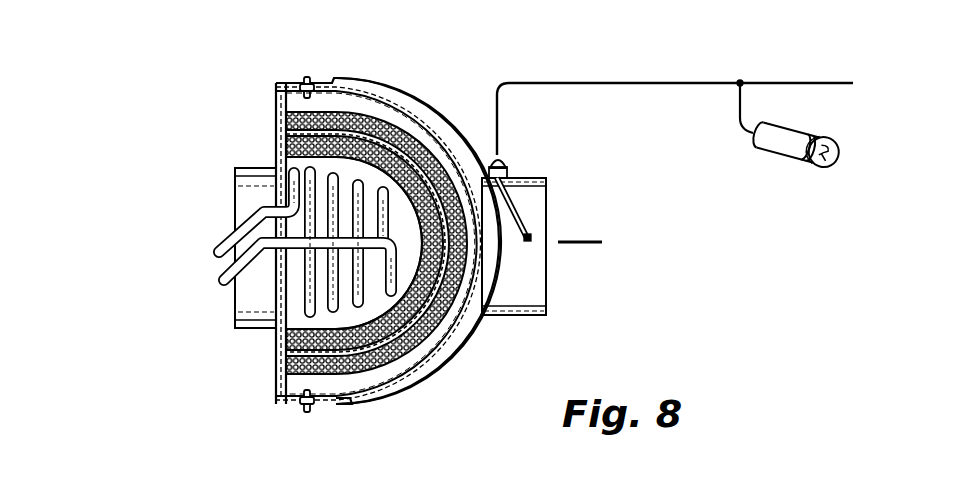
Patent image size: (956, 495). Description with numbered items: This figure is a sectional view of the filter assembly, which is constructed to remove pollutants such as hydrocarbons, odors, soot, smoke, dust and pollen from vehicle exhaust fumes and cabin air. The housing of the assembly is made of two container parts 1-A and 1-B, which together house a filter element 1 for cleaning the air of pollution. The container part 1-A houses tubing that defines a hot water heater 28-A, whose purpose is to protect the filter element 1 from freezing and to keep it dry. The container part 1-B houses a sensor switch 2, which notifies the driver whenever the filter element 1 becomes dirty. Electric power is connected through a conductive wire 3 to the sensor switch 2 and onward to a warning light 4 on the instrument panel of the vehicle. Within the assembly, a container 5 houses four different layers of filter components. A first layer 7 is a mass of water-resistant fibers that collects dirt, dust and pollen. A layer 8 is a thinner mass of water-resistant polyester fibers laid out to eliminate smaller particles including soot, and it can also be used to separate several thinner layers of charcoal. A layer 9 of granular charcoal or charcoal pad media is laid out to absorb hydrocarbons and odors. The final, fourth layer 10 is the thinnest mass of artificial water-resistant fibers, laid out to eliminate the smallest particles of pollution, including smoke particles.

The filter element 1 is at (462, 262).
The container part 1-A is at (297, 77).
The container part 1-B is at (432, 60).
The sensor switch 2 is at (531, 234).
The conductive wire 3 is at (748, 82).
The warning light 4 is at (786, 117).
The container 5 is at (305, 105).
The first layer 7 is at (278, 347).
The second or third layer 8 is at (278, 355).
The third or second layer 9 is at (278, 362).
The fourth layer 10 is at (278, 372).
The hot water heater 28-A is at (222, 271).